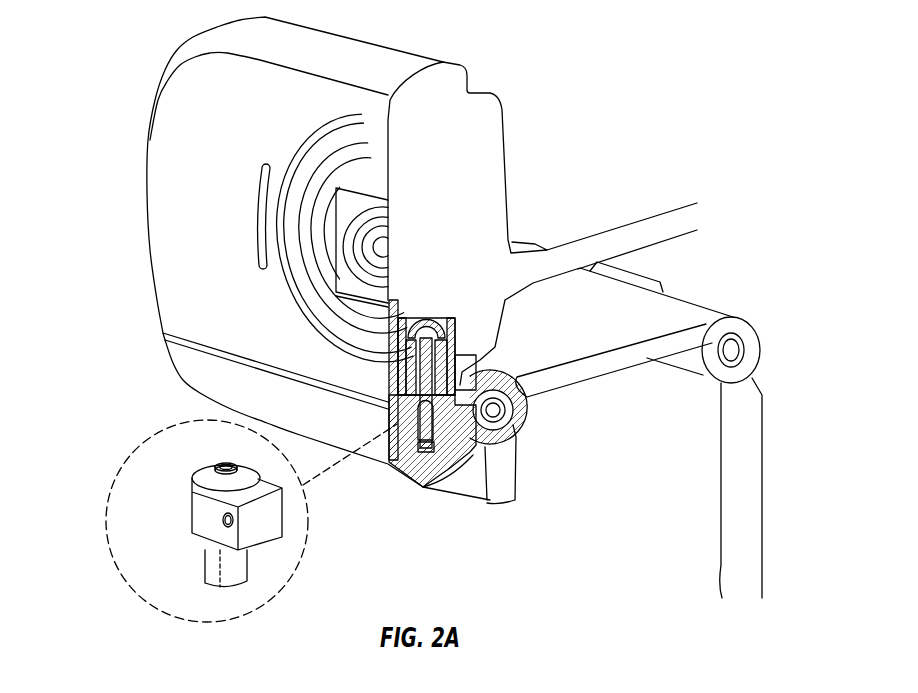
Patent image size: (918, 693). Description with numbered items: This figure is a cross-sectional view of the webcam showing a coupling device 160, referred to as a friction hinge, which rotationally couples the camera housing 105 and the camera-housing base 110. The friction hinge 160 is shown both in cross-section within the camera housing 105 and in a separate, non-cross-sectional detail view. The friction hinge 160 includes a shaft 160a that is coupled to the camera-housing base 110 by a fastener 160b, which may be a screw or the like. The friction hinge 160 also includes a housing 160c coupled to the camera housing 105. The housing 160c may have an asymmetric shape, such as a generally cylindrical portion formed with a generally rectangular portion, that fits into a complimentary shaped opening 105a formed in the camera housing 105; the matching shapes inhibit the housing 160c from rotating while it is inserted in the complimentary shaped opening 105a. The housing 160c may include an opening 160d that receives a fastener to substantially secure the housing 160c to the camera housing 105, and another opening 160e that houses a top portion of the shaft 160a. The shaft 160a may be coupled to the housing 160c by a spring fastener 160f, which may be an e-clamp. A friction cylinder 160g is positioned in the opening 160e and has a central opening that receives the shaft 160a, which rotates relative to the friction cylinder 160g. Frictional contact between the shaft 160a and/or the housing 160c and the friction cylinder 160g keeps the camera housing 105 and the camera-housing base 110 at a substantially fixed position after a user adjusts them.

The camera housing 105 is at (158, 197).
The complimentary shaped opening 105a is at (460, 383).
The camera-housing base 110 is at (187, 362).
The coupling device 160 is at (112, 502).
The shaft 160a is at (398, 427).
The fastener 160b is at (428, 378).
The housing 160c is at (397, 360).
The opening 160d is at (222, 518).
The opening 160e is at (397, 387).
The spring fastener 160f is at (207, 475).
The friction cylinder 160g is at (447, 352).